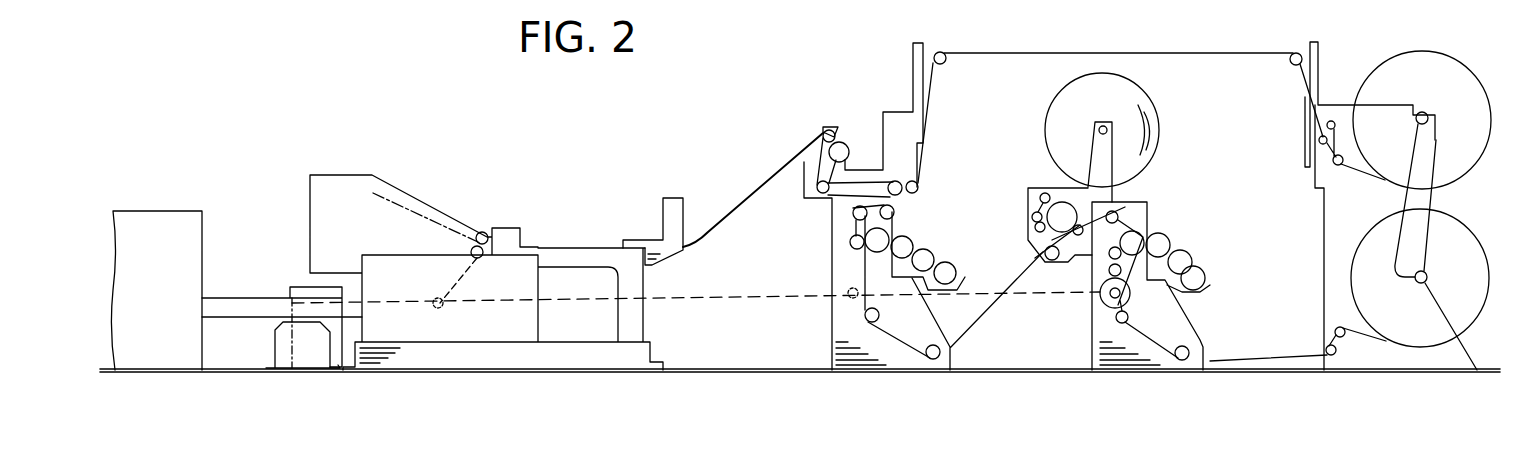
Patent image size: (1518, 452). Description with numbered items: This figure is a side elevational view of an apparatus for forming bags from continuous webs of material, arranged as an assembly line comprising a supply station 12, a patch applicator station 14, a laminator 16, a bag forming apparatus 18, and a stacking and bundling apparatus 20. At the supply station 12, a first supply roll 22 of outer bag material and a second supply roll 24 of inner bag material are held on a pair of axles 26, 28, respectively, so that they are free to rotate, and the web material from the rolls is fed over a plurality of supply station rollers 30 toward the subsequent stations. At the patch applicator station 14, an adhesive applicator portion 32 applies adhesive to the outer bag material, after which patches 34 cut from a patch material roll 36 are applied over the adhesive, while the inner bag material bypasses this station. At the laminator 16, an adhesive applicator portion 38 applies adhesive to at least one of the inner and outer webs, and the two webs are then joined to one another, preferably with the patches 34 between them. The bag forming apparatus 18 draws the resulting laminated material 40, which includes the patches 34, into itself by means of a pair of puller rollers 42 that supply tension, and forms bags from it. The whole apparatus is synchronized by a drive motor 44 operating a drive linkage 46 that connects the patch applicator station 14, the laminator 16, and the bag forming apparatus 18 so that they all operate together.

The supply station 12 is at (1408, 373).
The patch applicator station 14 is at (1167, 360).
The laminator 16 is at (897, 354).
The bag forming apparatus 18 is at (628, 372).
The stacking and bundling apparatus 20 is at (157, 376).
The first supply roll 22 is at (1463, 308).
The second supply roll 24 is at (1400, 62).
The axle 26 is at (1445, 211).
The axle 28 is at (1425, 112).
The supply station rollers 30 is at (1298, 53).
The adhesive applicator portion 32 is at (1200, 267).
The patches 34 is at (983, 307).
The patch material roll 36 is at (1055, 100).
The adhesive applicator portion 38 is at (923, 250).
The laminated material 40 is at (751, 195).
The puller rollers 42 is at (479, 232).
The drive motor 44 is at (300, 287).
The drive linkage 46 is at (689, 295).